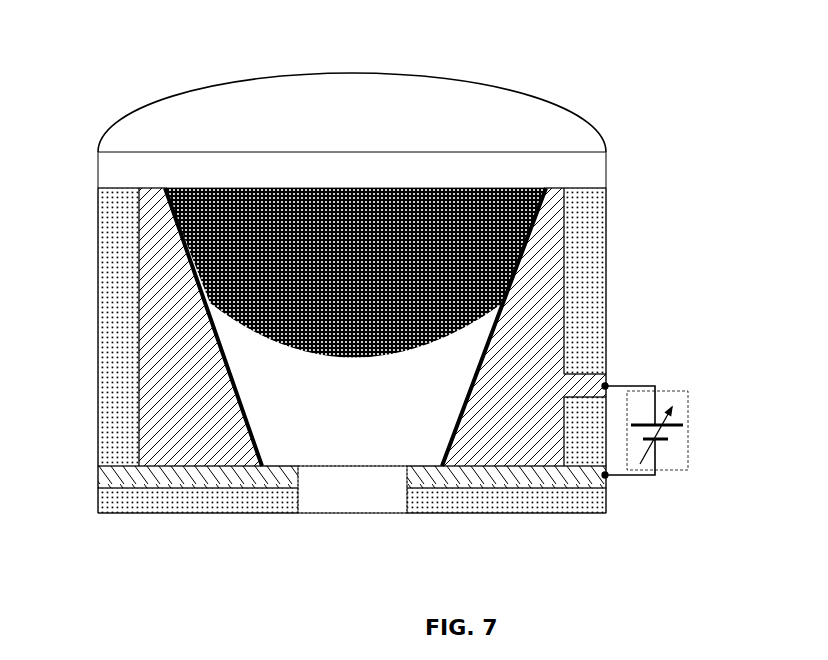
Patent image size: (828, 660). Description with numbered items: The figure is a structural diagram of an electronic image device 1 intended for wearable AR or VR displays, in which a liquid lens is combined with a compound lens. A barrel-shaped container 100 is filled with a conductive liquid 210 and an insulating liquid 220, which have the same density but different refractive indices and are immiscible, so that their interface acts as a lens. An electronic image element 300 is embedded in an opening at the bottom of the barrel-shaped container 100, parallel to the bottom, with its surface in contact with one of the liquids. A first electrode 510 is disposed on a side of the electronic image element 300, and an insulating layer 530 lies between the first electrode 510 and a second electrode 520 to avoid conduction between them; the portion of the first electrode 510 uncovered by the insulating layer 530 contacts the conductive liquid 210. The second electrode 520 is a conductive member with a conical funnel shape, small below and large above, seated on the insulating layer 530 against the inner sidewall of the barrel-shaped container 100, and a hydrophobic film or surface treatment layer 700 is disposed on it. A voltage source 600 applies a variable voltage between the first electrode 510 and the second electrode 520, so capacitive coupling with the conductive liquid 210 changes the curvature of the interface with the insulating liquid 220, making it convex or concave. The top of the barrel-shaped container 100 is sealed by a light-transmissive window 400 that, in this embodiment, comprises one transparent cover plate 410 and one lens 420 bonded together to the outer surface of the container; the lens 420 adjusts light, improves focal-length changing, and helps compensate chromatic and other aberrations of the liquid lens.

The electronic image device 1 is at (49, 51).
The barrel-shaped container 100 is at (606, 278).
The conductive liquid 210 is at (387, 450).
The insulating liquid 220 is at (291, 188).
The electronic image element 300 is at (317, 502).
The light-transmissive window 400 is at (664, 38).
The transparent cover plate 410 is at (606, 172).
The lens 420 is at (103, 137).
The first electrode 510 is at (580, 473).
The second electrode 520 is at (556, 350).
The insulating layer 530 is at (102, 478).
The voltage source 600 is at (688, 427).
The hydrophobic film or surface treatment layer 700 is at (546, 188).